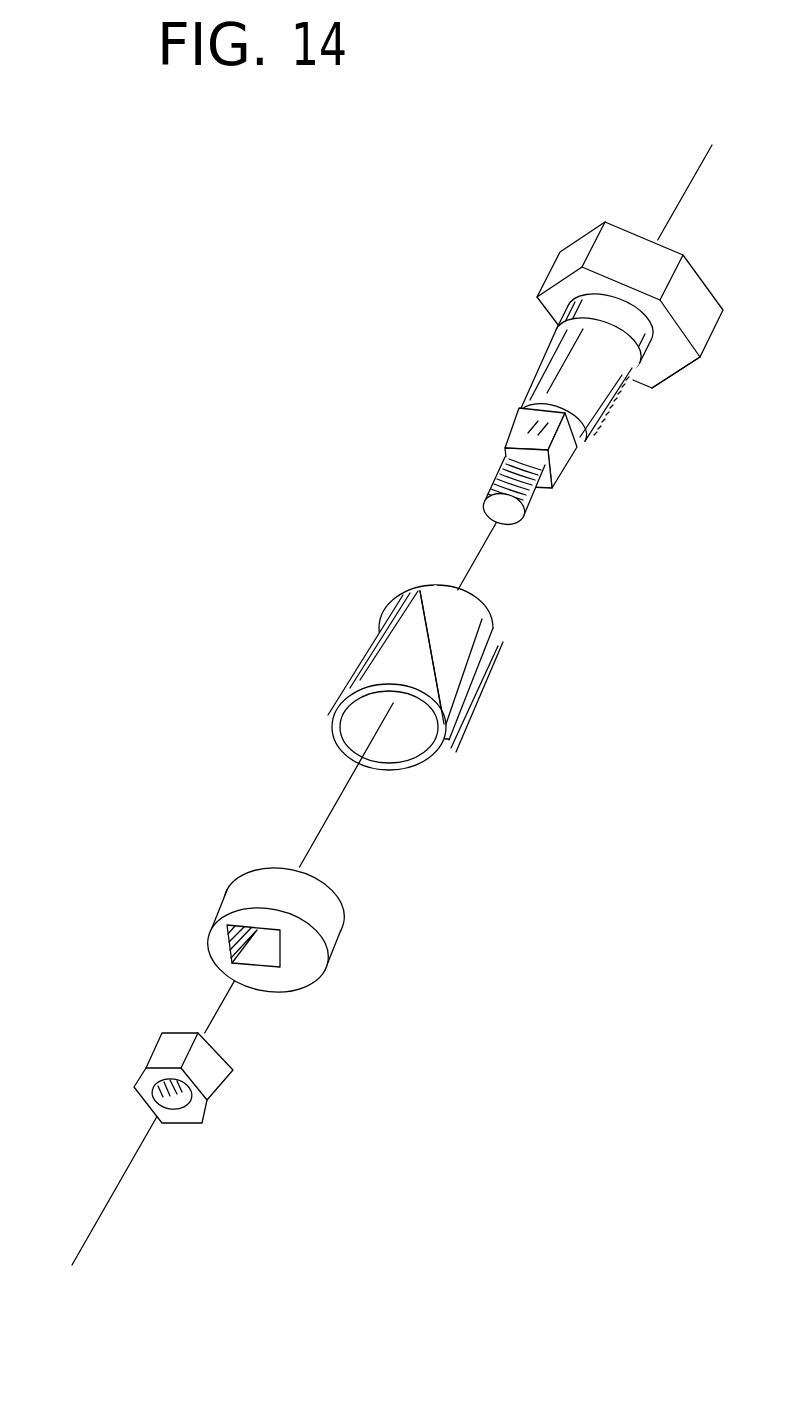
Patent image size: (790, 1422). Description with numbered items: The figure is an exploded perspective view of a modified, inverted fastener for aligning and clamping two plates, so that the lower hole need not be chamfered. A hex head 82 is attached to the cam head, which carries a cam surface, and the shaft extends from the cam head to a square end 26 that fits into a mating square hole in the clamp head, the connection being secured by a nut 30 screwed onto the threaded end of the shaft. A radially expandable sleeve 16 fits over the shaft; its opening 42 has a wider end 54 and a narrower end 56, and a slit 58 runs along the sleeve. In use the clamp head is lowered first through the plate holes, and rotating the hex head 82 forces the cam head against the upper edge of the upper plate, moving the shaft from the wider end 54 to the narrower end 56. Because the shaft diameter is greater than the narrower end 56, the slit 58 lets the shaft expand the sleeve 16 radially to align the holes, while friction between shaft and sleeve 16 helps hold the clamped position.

The hex head 82 is at (570, 257).
The square end 26 is at (560, 455).
The radially expandable sleeve 16 is at (366, 652).
The wider end 54 is at (347, 722).
The opening 42 is at (383, 743).
The narrower end 56 is at (405, 745).
The slit 58 is at (487, 683).
The nut 30 is at (147, 1060).